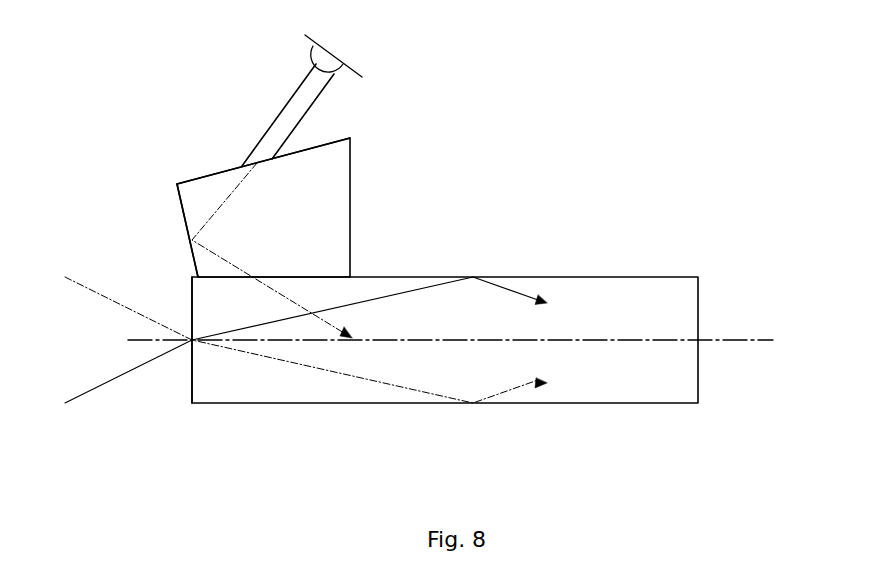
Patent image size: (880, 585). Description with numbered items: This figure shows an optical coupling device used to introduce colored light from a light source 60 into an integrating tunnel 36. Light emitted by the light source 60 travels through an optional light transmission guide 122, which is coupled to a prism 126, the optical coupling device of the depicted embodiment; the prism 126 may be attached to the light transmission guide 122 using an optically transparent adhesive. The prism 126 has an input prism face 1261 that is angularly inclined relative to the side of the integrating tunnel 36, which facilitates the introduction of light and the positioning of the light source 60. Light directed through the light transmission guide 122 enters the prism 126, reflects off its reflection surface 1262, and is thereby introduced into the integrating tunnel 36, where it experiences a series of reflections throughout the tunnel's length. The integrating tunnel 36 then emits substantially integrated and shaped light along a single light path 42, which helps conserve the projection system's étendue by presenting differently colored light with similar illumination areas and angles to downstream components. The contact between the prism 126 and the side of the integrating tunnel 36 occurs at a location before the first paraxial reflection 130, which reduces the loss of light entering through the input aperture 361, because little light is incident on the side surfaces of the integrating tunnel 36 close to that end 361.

The integrating tunnel 36 is at (608, 403).
The input aperture 361 is at (192, 392).
The single light path 42 is at (753, 340).
The light source 60 is at (344, 62).
The light transmission guide 122 is at (262, 137).
The prism 126 is at (335, 212).
The input prism face 1261 is at (313, 146).
The reflection surface 1262 is at (178, 210).
The first paraxial reflection 130 is at (477, 277).